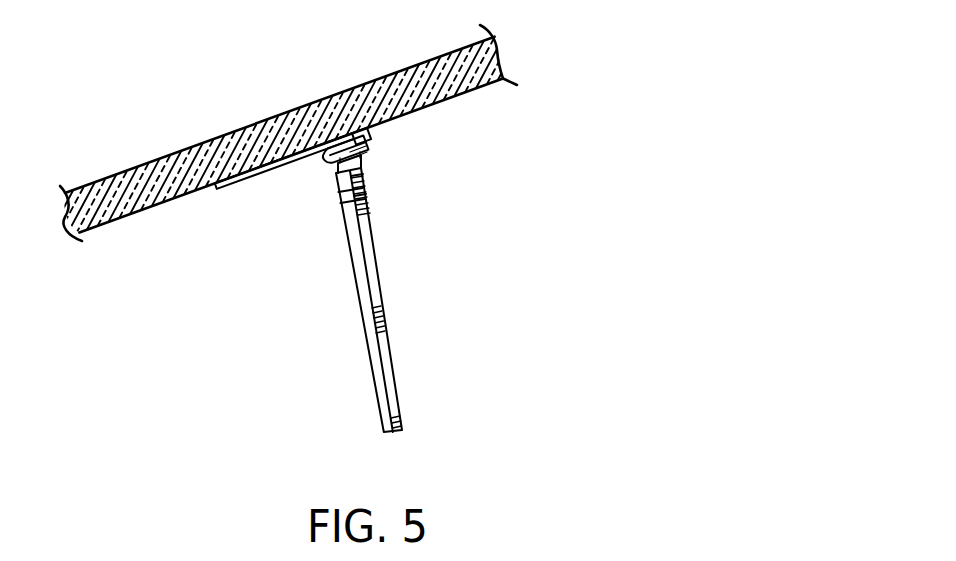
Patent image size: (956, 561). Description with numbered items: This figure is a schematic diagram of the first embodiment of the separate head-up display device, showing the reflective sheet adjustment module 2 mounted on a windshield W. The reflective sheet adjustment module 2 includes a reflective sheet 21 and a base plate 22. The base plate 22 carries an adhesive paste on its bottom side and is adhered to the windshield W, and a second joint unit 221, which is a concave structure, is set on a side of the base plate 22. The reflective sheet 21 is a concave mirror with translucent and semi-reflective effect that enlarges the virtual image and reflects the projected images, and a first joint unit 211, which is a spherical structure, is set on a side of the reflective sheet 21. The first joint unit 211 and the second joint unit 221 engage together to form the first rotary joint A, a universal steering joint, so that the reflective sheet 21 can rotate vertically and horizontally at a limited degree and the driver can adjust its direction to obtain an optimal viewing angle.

The windshield W is at (282, 114).
The reflective sheet adjustment module 2 is at (382, 276).
The reflective sheet 21 is at (358, 312).
The first joint unit 211 is at (366, 157).
The base plate 22 is at (368, 130).
The second joint unit 221 is at (367, 152).
The first rotary joint A is at (510, 185).